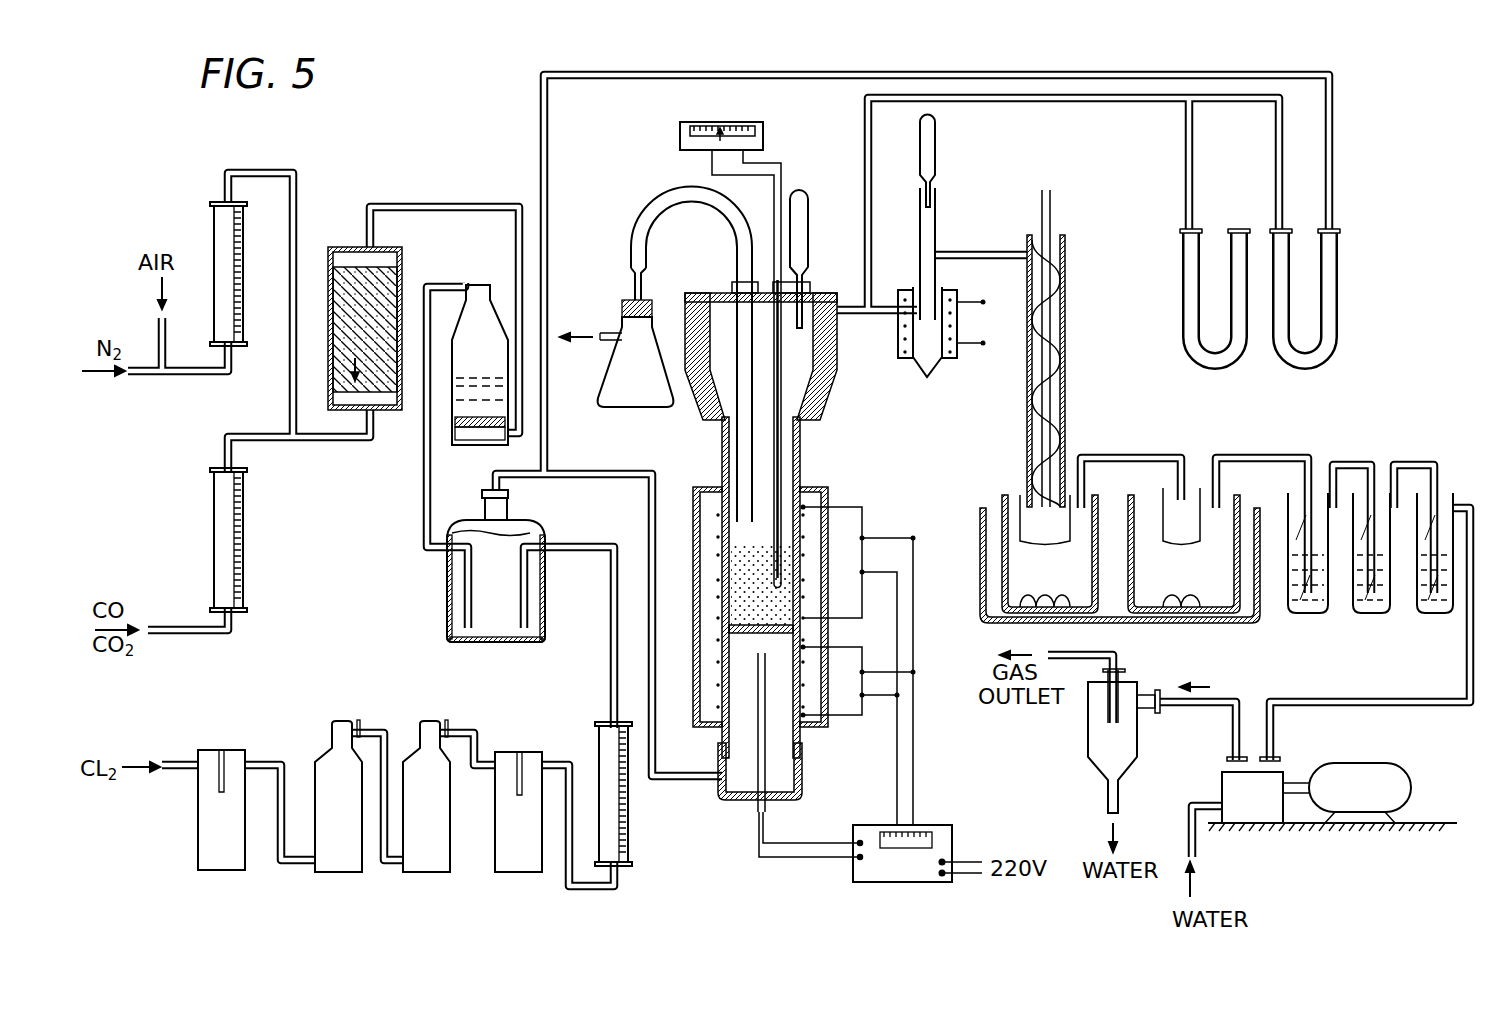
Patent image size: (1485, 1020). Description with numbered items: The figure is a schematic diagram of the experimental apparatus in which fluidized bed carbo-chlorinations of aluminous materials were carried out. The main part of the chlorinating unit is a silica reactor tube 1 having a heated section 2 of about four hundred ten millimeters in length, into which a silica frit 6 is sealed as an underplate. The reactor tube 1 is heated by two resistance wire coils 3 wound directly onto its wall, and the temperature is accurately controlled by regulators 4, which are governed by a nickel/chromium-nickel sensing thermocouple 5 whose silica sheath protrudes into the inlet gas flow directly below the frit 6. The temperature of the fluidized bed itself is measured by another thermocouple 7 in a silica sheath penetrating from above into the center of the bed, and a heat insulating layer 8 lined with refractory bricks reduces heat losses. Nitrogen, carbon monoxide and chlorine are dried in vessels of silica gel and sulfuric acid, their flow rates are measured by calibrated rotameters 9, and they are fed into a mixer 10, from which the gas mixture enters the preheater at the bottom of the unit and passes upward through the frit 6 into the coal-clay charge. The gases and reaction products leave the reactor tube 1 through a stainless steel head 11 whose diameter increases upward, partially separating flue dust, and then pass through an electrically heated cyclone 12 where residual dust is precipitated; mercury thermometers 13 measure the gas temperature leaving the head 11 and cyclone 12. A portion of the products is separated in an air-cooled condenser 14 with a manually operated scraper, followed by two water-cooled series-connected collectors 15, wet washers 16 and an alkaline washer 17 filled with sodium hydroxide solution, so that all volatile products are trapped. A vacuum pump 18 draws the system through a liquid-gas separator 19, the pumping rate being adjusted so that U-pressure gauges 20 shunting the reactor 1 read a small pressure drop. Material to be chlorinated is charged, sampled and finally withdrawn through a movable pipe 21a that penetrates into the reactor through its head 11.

The silica reactor tube 1 is at (810, 459).
The heated section 2 is at (720, 578).
The resistance wire coils 3 is at (866, 517).
The regulators 4 is at (888, 883).
The sensing thermocouple 5 is at (752, 805).
The silica frit 6 is at (740, 635).
The thermocouple 7 is at (782, 283).
The heat insulating layer 8 is at (700, 405).
The calibrated rotameters 9 is at (214, 245).
The mixer 10 is at (517, 645).
The stainless steel head 11 is at (728, 295).
The cyclone 12 is at (900, 345).
The mercury thermometers 13 is at (806, 240).
The air-cooled condenser 14 is at (1066, 313).
The water-cooled collectors 15 is at (1072, 527).
The wet washers 16 is at (1385, 490).
The alkaline washer 17 is at (1440, 490).
The vacuum pump 18 is at (1378, 798).
The liquid-gas separator 19 is at (1140, 685).
The U-pressure gauges 20 is at (1290, 365).
The movable pipe 21a is at (665, 190).